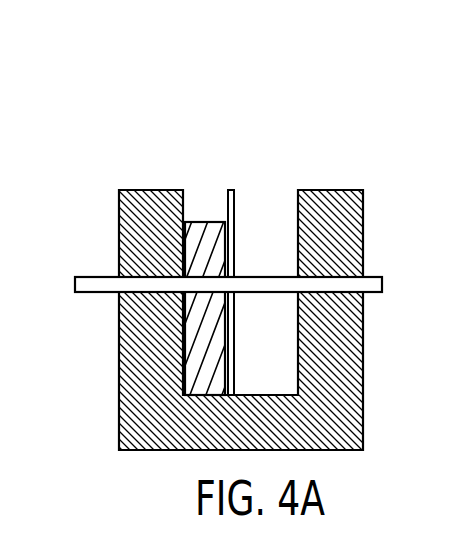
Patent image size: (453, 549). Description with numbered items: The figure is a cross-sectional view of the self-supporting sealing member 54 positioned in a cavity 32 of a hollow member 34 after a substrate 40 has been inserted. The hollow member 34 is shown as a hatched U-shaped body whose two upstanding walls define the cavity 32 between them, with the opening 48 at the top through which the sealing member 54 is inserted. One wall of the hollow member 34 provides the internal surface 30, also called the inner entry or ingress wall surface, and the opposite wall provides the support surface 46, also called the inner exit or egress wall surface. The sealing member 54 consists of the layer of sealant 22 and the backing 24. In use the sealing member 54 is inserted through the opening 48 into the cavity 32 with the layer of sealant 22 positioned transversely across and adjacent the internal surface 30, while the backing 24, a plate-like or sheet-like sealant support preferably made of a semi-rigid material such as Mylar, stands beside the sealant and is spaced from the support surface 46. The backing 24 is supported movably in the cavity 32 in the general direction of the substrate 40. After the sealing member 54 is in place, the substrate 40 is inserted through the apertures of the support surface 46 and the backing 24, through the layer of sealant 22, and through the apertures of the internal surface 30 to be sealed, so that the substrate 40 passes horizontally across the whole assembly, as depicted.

The sealing member 54 is at (105, 87).
The internal surface 30 is at (185, 196).
The support surface 46 is at (287, 197).
The hollow member 34 is at (118, 402).
The cavity 32 is at (270, 247).
The opening 48 is at (269, 186).
The layer of sealant 22 is at (200, 222).
The backing 24 is at (230, 193).
The substrate 40 is at (92, 277).